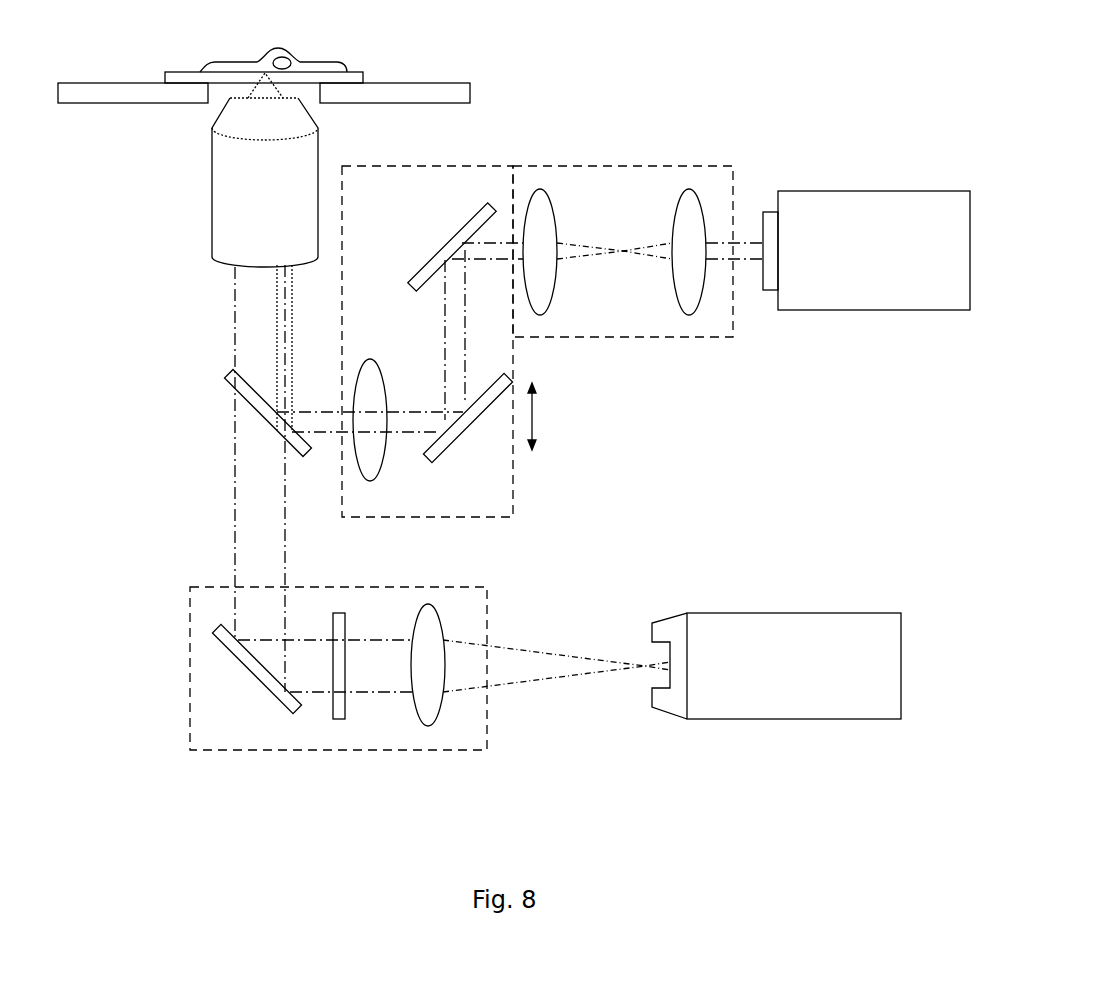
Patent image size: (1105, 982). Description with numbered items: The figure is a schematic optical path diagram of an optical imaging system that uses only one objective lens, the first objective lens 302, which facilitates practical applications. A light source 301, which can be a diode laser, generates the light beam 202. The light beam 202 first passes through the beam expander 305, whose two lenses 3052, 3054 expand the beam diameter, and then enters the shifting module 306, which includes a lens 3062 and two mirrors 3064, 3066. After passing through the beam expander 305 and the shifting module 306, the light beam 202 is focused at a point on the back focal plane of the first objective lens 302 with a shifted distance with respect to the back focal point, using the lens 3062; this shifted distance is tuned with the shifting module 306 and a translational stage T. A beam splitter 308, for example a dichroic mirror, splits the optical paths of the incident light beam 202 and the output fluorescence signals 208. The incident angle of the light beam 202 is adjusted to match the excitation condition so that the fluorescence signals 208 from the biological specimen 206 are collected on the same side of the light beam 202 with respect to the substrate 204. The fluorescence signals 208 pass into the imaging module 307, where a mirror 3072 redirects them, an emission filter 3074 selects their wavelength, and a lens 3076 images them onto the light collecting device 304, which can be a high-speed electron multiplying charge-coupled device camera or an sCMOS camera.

The light beam 202 is at (282, 345).
The substrate 204 is at (165, 78).
The biological specimen 206 is at (212, 68).
The fluorescence signals 208 is at (248, 288).
The light source 301 is at (960, 250).
The first objective lens 302 is at (230, 192).
The light collecting device 304 is at (892, 667).
The beam expander 305 is at (710, 165).
The shifting module 306 is at (513, 500).
The imaging module 307 is at (487, 605).
The beam splitter 308 is at (260, 405).
The lens 3052 is at (688, 196).
The lens 3054 is at (537, 195).
The lens 3062 is at (370, 477).
The mirror 3064 is at (440, 253).
The mirror 3066 is at (468, 425).
The mirror 3072 is at (248, 660).
The emission filter 3074 is at (338, 713).
The lens 3076 is at (428, 720).
The translational stage T is at (541, 416).